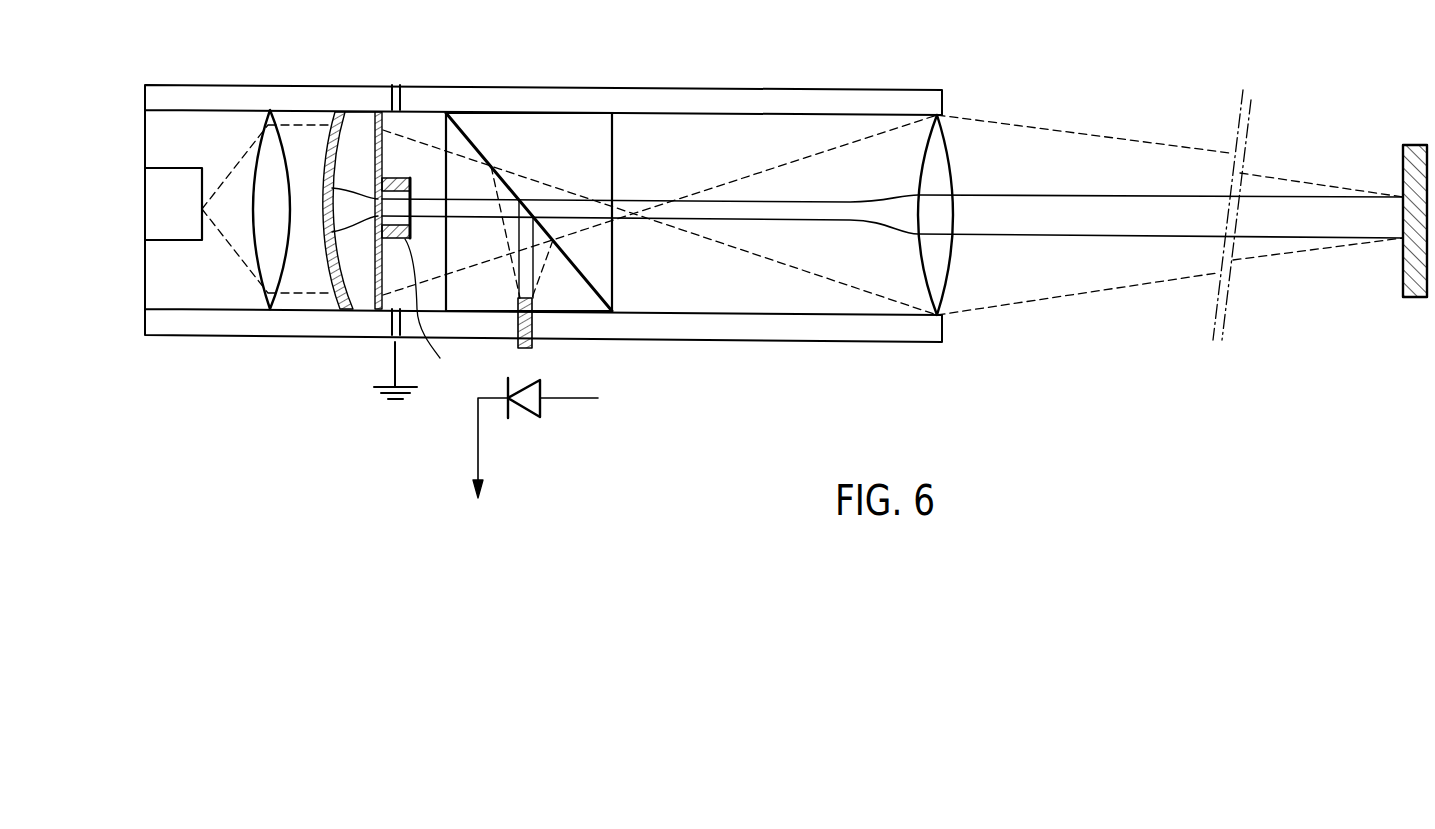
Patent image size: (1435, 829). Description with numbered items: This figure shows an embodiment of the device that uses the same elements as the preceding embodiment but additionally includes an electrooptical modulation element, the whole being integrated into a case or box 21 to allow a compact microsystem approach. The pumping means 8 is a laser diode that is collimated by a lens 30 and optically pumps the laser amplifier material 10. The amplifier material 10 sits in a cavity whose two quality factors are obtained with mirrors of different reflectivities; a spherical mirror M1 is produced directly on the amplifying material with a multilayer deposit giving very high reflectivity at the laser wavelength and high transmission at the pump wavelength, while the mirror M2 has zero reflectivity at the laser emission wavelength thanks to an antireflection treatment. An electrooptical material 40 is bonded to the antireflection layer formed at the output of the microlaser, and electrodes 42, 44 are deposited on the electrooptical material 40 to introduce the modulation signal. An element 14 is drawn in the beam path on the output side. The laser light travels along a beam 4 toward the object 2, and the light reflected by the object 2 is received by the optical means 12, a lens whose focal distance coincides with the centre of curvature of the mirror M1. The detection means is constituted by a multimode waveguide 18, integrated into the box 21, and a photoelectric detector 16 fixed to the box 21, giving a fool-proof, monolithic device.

The object 2 is at (1408, 145).
The measuring beam 4 is at (1147, 237).
The optical means for pumping 8 is at (157, 172).
The laser amplifier material 10 is at (352, 120).
The optical means for reception 12 is at (950, 128).
The beam splitter 14 is at (578, 115).
The photoelectric detector 16 is at (547, 403).
The waveguide 18 is at (534, 330).
The case or box 21 is at (748, 97).
The lens 30 is at (270, 110).
The electrooptical material 40 is at (410, 222).
The electrode 42 is at (405, 176).
The electrode 44 is at (439, 312).
The spherical mirror M1 is at (317, 272).
The mirror M2 is at (385, 143).